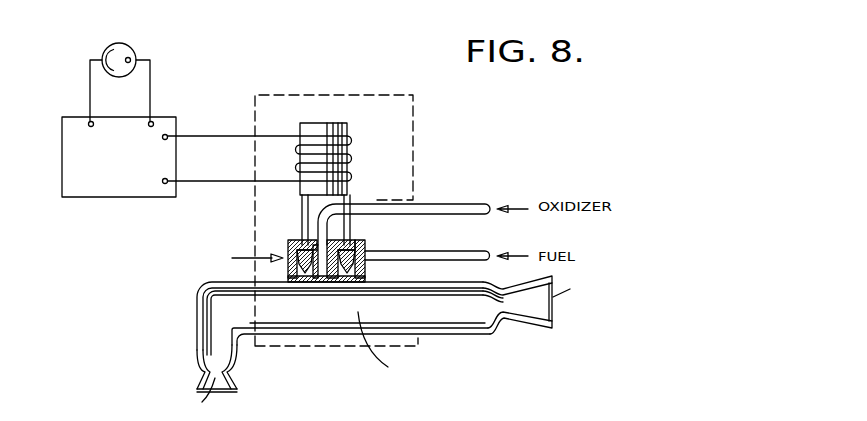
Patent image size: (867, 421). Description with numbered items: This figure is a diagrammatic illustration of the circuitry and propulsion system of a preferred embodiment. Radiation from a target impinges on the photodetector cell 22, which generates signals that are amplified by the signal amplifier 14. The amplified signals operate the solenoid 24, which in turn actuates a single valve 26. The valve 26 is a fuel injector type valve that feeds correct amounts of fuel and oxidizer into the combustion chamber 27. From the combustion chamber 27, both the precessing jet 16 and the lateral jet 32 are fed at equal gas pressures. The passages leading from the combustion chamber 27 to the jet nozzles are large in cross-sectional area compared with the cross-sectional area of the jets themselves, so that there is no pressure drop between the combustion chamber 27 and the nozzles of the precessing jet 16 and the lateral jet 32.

The signal amplifier 14 is at (73, 146).
The photodetector cell 22 is at (131, 58).
The solenoid 24 is at (349, 141).
The valve 26 is at (290, 243).
The combustion chamber 27 is at (293, 325).
The lateral jet 32 is at (528, 313).
The precessing jet 16 is at (199, 360).